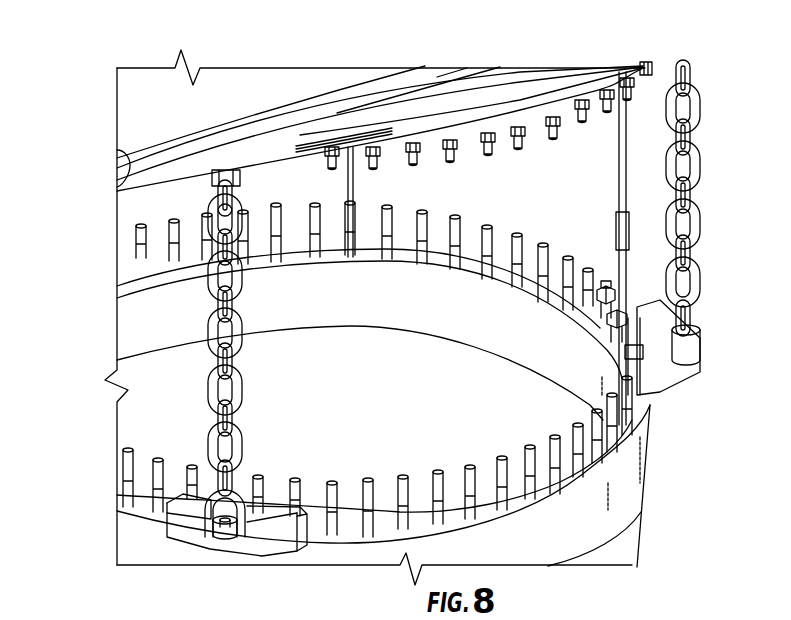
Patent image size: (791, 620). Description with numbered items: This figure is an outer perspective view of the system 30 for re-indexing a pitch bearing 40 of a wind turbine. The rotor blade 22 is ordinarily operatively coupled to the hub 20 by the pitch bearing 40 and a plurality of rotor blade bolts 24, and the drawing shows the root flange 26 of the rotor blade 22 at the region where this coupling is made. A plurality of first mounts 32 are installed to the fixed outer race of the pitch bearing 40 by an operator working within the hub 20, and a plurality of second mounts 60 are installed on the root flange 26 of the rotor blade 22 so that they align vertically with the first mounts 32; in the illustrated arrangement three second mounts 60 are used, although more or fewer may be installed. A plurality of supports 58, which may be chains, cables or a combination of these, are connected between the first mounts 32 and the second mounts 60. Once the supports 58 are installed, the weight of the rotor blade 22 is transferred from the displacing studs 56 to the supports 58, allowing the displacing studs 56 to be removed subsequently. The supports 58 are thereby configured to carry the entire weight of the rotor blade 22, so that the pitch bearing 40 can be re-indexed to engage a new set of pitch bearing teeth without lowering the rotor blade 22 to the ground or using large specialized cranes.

The hub 20 is at (133, 110).
The rotor blade 22 is at (637, 548).
The rotor blade bolts 24 is at (128, 468).
The root flange 26 is at (650, 418).
The system 30 is at (92, 74).
The first mounts 32 is at (130, 183).
The pitch bearing 40 is at (641, 64).
The displacing studs 56 is at (617, 230).
The supports 58 is at (687, 137).
The second mounts 60 is at (255, 542).